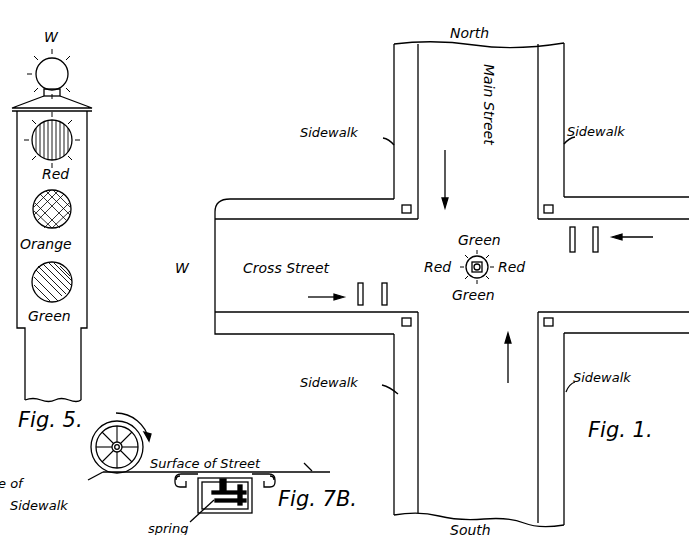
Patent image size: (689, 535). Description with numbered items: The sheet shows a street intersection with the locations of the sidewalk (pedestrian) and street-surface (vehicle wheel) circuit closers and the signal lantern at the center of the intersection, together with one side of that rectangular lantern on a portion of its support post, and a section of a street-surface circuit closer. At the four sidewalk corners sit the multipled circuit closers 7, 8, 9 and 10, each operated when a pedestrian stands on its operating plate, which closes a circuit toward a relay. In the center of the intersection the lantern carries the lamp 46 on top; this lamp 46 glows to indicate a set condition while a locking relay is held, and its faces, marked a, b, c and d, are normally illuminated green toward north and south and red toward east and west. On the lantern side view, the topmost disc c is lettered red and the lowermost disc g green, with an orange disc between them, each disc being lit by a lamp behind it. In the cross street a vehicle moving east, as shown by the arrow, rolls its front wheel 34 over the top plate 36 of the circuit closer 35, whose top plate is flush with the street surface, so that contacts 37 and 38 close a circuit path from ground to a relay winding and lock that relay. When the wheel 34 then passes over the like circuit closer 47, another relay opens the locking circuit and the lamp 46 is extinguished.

In FIG. 1, the circuit closer 7 is at (402, 322).
In FIG. 1, the circuit closer 8 is at (553, 322).
In FIG. 1, the circuit closer 9 is at (553, 209).
In FIG. 1, the circuit closer 10 is at (402, 209).
In FIG. 7B, the front wheel 34 is at (91, 447).
In FIG. 7B, the circuit closer 35 is at (229, 501).
In FIG. 1, the circuit closer 35 is at (345, 289).
In FIG. 7B, the top plate 36 is at (261, 475).
In FIG. 7B, the contact 37 is at (223, 504).
In FIG. 7B, the contact 38 is at (220, 491).
In FIG. 5, the lamp 46 is at (68, 75).
In FIG. 1, the lamp 46 is at (467, 259).
In FIG. 1, the circuit closer 47 is at (398, 296).
In FIG. 1, the signal face a is at (488, 272).
In FIG. 1, the signal face b is at (488, 262).
In FIG. 5, the red lamp / signal face c is at (72, 147).
In FIG. 1, the red lamp / signal face c is at (466, 263).
In FIG. 1, the signal face d is at (467, 273).
In FIG. 5, the green lamp g is at (72, 288).